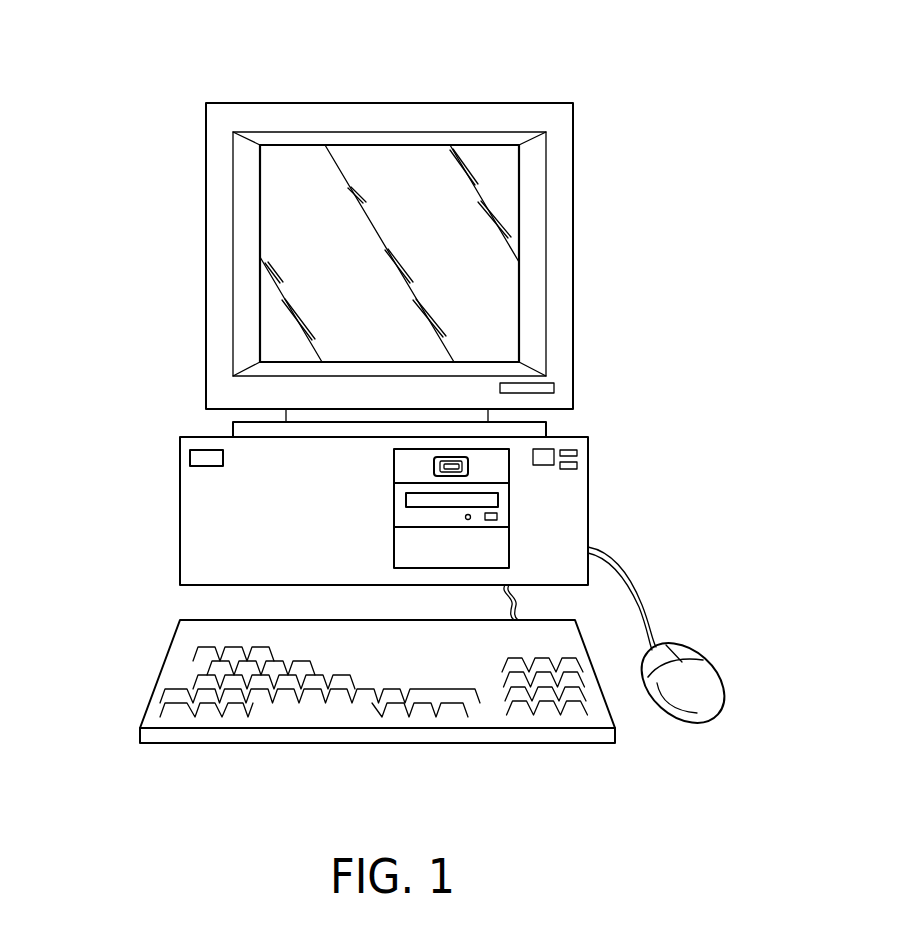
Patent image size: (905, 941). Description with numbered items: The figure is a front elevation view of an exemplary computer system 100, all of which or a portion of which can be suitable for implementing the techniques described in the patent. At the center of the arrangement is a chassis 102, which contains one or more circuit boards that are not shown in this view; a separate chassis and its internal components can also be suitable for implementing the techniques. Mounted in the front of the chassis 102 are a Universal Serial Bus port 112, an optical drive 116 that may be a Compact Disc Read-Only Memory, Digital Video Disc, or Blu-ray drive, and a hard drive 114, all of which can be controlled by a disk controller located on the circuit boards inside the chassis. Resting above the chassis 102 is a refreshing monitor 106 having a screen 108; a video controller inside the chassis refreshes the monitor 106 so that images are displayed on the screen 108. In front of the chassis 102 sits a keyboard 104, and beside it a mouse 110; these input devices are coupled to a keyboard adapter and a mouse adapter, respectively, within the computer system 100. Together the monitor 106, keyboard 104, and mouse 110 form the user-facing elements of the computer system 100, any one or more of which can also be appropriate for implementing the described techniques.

The computer system 100 is at (569, 74).
The chassis 102 is at (180, 513).
The keyboard 104 is at (160, 665).
The refreshing monitor 106 is at (280, 103).
The screen 108 is at (307, 258).
The mouse 110 is at (700, 675).
The Universal Serial Bus (USB) port 112 is at (470, 462).
The hard drive 114 is at (500, 547).
The CD-ROM, DVD, or Blu-ray drive 116 is at (500, 506).